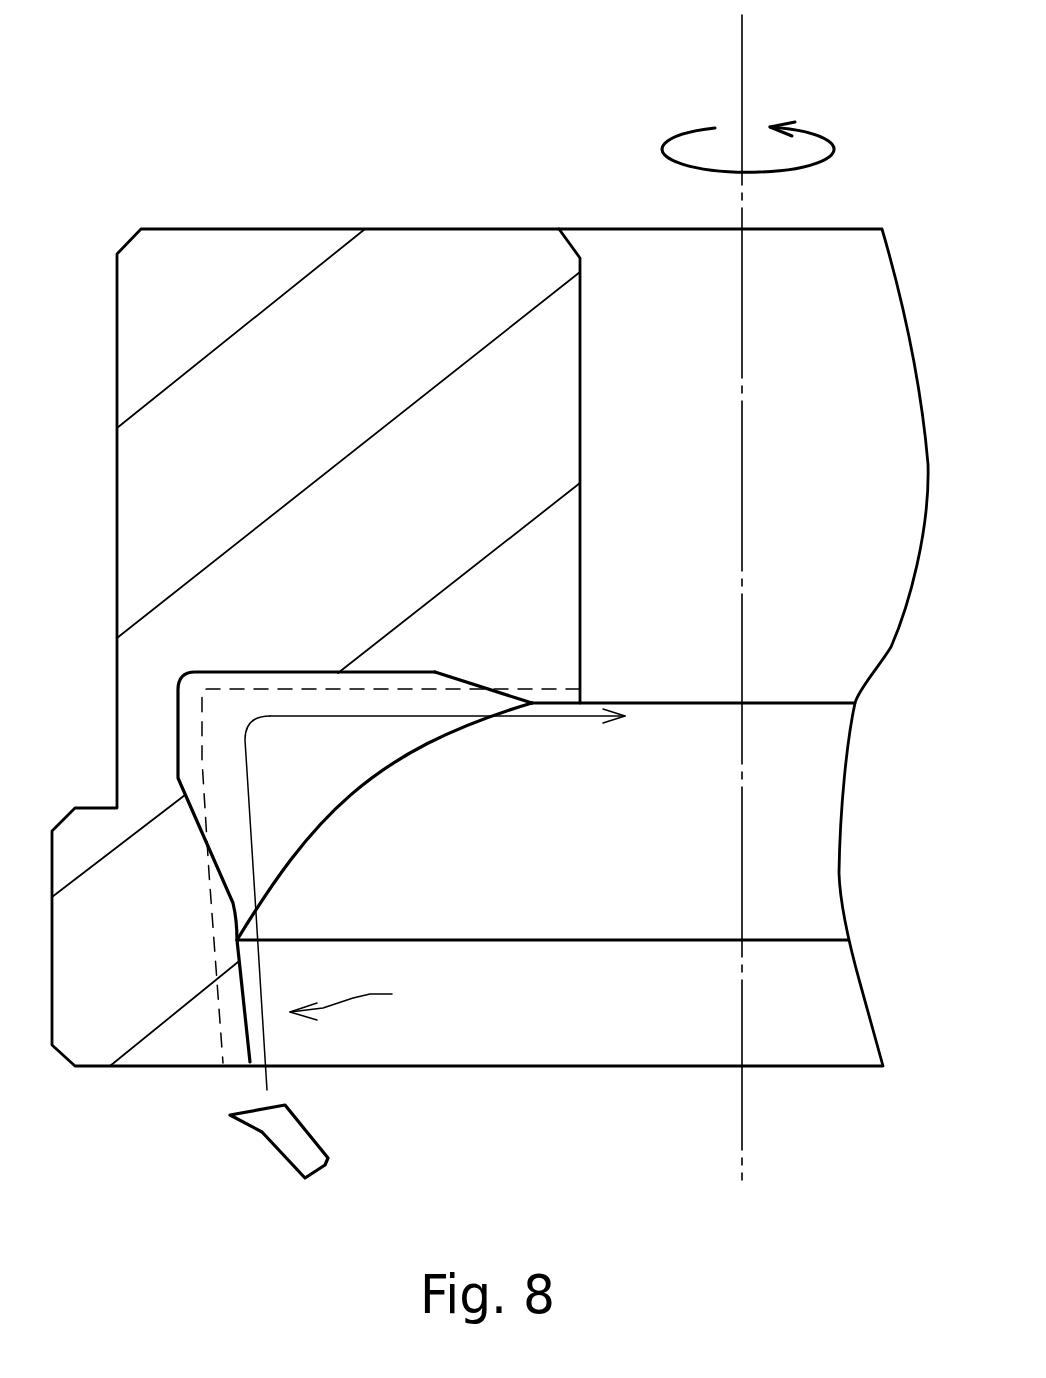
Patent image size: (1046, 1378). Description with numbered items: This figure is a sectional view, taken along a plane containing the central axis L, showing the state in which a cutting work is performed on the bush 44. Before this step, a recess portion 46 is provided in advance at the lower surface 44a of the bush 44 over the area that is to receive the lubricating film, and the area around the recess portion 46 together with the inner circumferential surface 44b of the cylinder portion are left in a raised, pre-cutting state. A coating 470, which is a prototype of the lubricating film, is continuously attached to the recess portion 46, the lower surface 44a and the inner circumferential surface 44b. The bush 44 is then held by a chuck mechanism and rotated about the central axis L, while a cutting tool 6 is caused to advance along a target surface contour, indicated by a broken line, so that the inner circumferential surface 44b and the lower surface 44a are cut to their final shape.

The bush 44 is at (253, 80).
The lower surface of the bush 44a is at (514, 722).
The inner circumferential surface of the cylinder portion 44b is at (380, 999).
The recess portion 46 is at (238, 670).
The coating 470 is at (385, 760).
The cutting tool 6 is at (312, 1135).
The central axis L is at (742, 97).